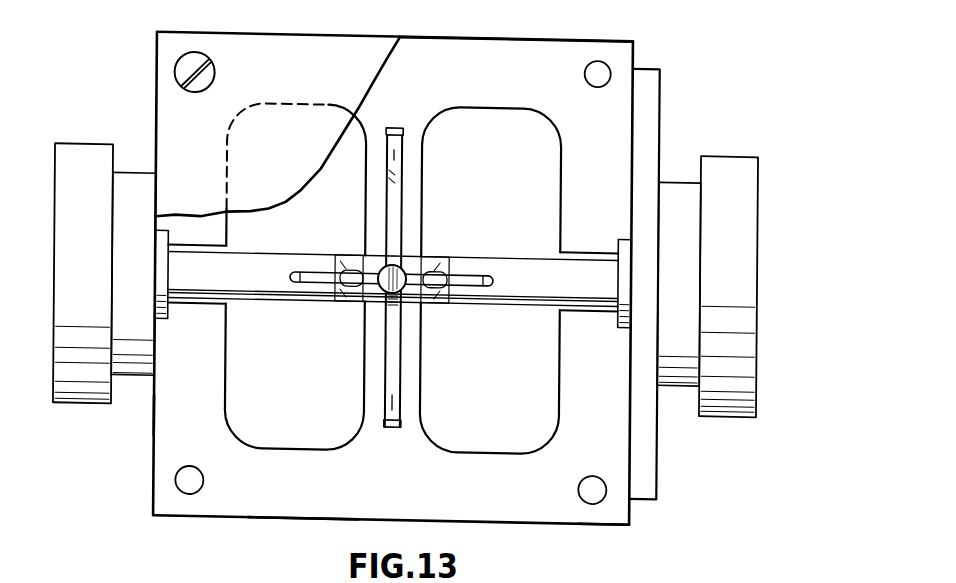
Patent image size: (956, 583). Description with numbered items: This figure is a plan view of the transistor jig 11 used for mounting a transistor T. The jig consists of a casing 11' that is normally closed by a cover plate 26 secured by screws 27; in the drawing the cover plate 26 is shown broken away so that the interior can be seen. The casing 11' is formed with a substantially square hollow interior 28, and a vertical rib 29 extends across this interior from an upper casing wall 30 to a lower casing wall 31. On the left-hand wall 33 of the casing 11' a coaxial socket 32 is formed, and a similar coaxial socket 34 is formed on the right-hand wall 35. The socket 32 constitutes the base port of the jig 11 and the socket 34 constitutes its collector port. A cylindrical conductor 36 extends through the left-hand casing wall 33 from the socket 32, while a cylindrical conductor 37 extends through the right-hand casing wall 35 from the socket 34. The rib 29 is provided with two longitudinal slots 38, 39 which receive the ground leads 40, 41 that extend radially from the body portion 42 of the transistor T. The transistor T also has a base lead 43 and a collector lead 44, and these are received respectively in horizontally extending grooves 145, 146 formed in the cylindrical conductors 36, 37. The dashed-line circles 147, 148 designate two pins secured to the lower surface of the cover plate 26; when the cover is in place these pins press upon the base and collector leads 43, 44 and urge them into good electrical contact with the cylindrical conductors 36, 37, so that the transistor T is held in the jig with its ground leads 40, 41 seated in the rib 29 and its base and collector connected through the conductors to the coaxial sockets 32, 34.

The transistor jig 11 is at (666, 250).
The casing 11' is at (393, 278).
The cover plate 26 is at (352, 46).
The screws 27 is at (183, 73).
The hollow interior 28 is at (502, 194).
The vertical rib 29 is at (372, 197).
The upper casing wall 30 is at (432, 46).
The lower casing wall 31 is at (300, 509).
The coaxial socket 32 is at (112, 158).
The left-hand wall 33 is at (165, 426).
The coaxial socket 34 is at (750, 153).
The right-hand wall 35 is at (613, 445).
The cylindrical conductor 36 is at (250, 266).
The cylindrical conductor 37 is at (548, 293).
The longitudinal slot 38 is at (386, 132).
The longitudinal slot 39 is at (385, 424).
The ground lead 40 is at (395, 153).
The ground lead 41 is at (401, 403).
The body portion 42 is at (400, 290).
The base lead 43 is at (327, 285).
The collector lead 44 is at (465, 285).
The horizontally extending groove 145 is at (297, 274).
The horizontally extending groove 146 is at (487, 271).
The pin 147 is at (345, 271).
The pin 148 is at (445, 271).
The transistor T is at (378, 290).